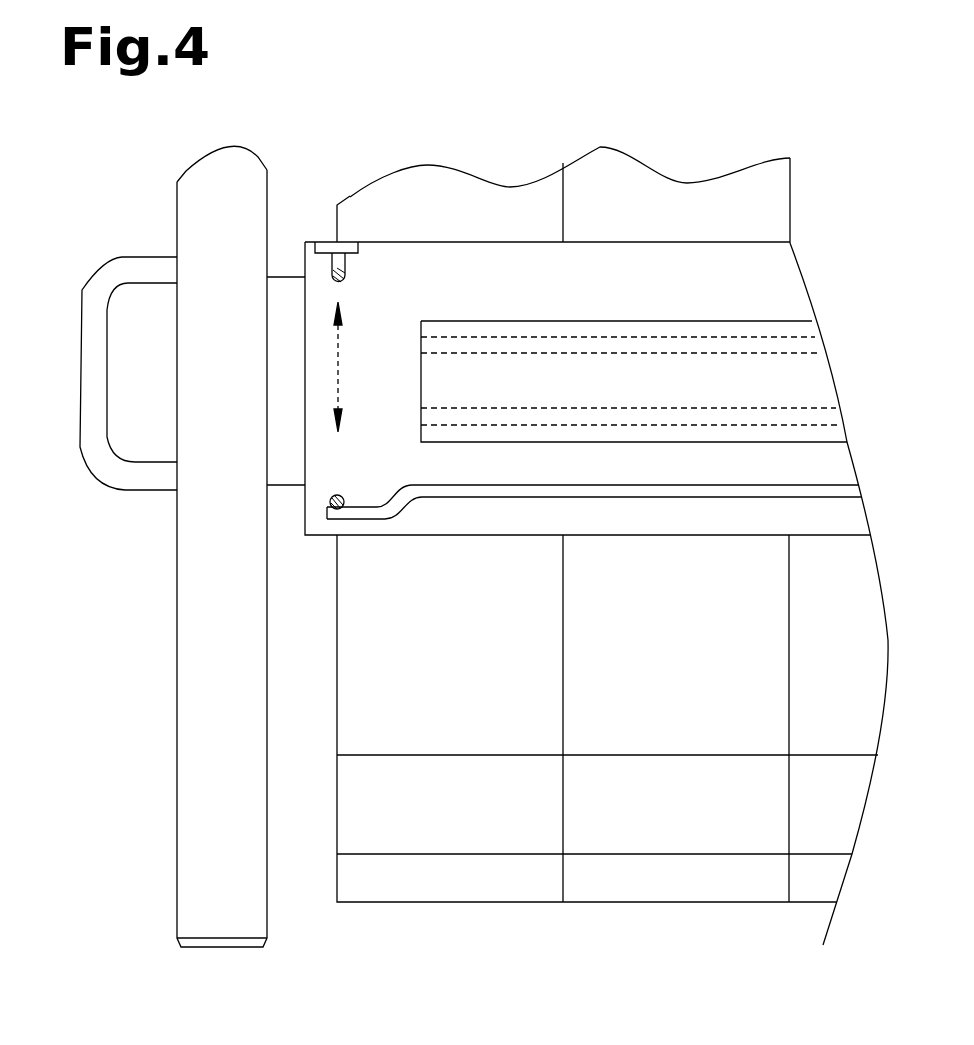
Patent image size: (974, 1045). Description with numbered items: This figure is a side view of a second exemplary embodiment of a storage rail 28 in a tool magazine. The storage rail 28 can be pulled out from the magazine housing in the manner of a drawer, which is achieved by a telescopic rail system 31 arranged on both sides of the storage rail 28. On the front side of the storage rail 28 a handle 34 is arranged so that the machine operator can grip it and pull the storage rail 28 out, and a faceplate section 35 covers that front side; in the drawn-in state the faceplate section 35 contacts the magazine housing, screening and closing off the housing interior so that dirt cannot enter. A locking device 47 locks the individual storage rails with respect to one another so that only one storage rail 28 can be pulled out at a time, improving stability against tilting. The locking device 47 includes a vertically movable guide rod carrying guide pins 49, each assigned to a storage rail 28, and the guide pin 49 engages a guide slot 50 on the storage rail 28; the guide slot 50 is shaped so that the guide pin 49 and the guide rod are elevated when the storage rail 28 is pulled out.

The storage rail 28 is at (448, 283).
The telescopic rail system 31 is at (687, 310).
The handle 34 is at (93, 462).
The faceplate section 35 is at (208, 805).
The locking device 47 is at (348, 206).
The guide pin 49 is at (330, 503).
The guide slot 50 is at (822, 492).